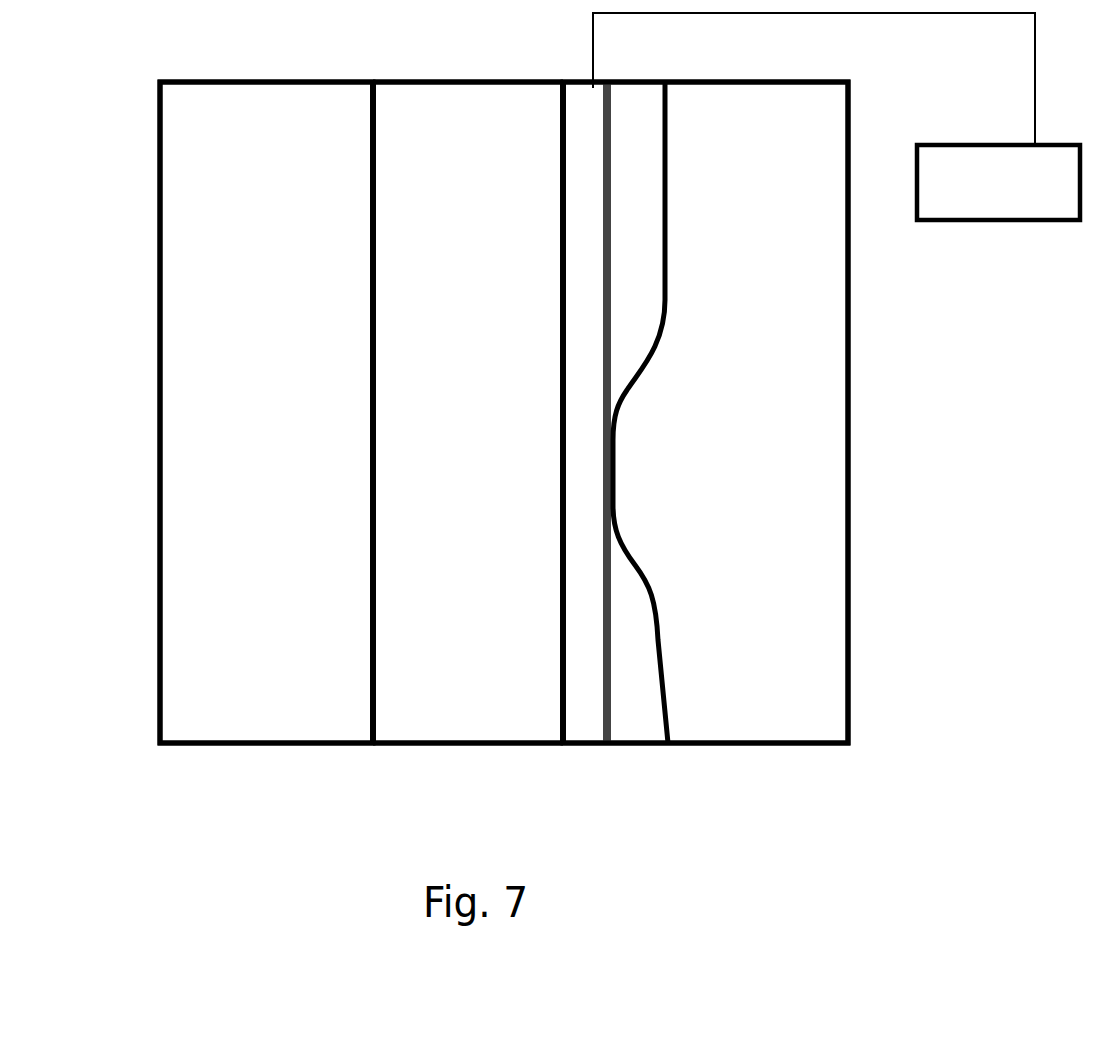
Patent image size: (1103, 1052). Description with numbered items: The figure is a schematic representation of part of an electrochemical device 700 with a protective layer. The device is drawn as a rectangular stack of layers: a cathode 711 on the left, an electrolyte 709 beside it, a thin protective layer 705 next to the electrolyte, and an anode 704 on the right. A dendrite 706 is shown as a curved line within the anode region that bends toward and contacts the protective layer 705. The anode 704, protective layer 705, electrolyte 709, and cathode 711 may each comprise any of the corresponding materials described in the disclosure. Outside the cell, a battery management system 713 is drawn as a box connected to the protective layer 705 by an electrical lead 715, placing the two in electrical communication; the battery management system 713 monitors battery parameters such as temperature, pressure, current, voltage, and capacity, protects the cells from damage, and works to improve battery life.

The electrochemical device 700 is at (907, 437).
The anode 704 is at (790, 286).
The protective layer 705 is at (577, 625).
The dendrite 706 is at (640, 469).
The electrolyte 709 is at (502, 293).
The cathode 711 is at (278, 350).
The battery management system 713 is at (1012, 190).
The electrical lead 715 is at (883, 13).